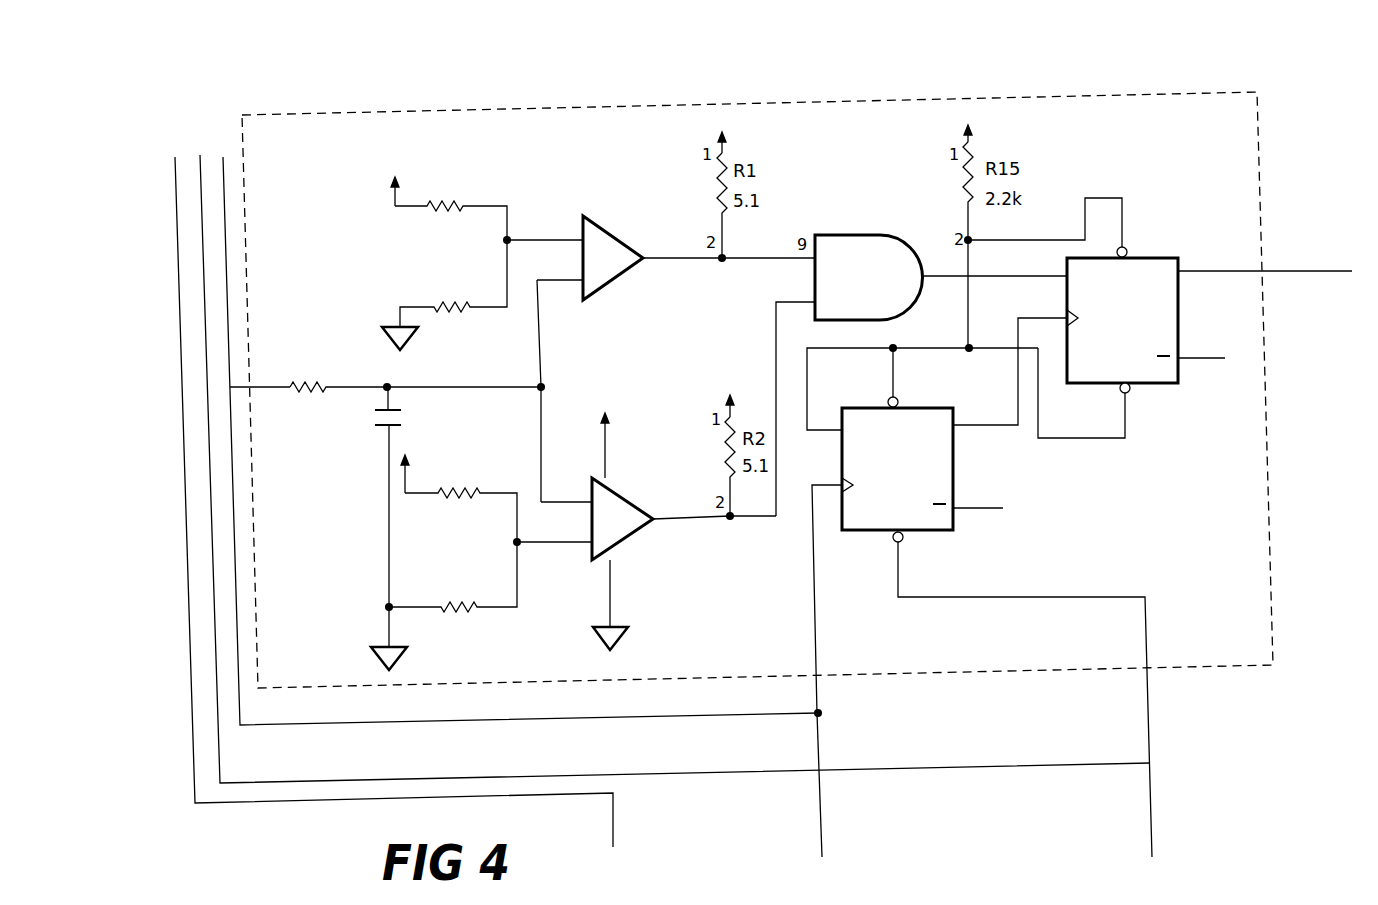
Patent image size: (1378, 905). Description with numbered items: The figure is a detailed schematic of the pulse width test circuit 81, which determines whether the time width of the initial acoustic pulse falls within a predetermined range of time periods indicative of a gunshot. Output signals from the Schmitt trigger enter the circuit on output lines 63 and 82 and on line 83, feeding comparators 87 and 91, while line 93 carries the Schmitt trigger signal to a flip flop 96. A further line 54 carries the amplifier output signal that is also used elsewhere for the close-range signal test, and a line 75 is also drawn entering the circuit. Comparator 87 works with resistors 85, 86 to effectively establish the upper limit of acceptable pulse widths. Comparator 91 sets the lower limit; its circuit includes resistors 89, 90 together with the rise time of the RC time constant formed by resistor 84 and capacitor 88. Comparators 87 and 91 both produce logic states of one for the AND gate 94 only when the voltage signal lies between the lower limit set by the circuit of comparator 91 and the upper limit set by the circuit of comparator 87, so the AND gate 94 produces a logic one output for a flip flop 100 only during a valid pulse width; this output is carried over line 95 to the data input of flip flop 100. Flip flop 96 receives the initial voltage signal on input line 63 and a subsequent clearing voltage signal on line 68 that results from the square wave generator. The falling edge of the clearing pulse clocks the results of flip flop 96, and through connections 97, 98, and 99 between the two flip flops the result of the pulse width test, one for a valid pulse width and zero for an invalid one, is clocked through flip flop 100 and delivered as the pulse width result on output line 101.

The line 54 is at (175, 184).
The output line 63 is at (822, 797).
The output line 68 is at (1150, 705).
The signal line 75 is at (200, 170).
The pulse width test circuit 81 is at (505, 112).
The output line 82 is at (223, 170).
The line 83 is at (262, 386).
The resistor 84 is at (315, 340).
The resistor 85 is at (463, 204).
The resistor 86 is at (440, 305).
The comparator 87 is at (587, 216).
The capacitor 88 is at (378, 428).
The resistor 89 is at (470, 492).
The resistor 90 is at (470, 606).
The comparator 91 is at (616, 550).
The line 93 is at (813, 583).
The AND gate 94 is at (872, 235).
The AND gate output line 95 is at (962, 278).
The flip flop 96 is at (955, 472).
The flip-flop interconnect line 97 is at (1017, 430).
The clear line 98 is at (1100, 440).
The preset line 99 is at (1040, 240).
The flip flop 100 is at (1176, 390).
The pulse width results output line 101 is at (1237, 272).